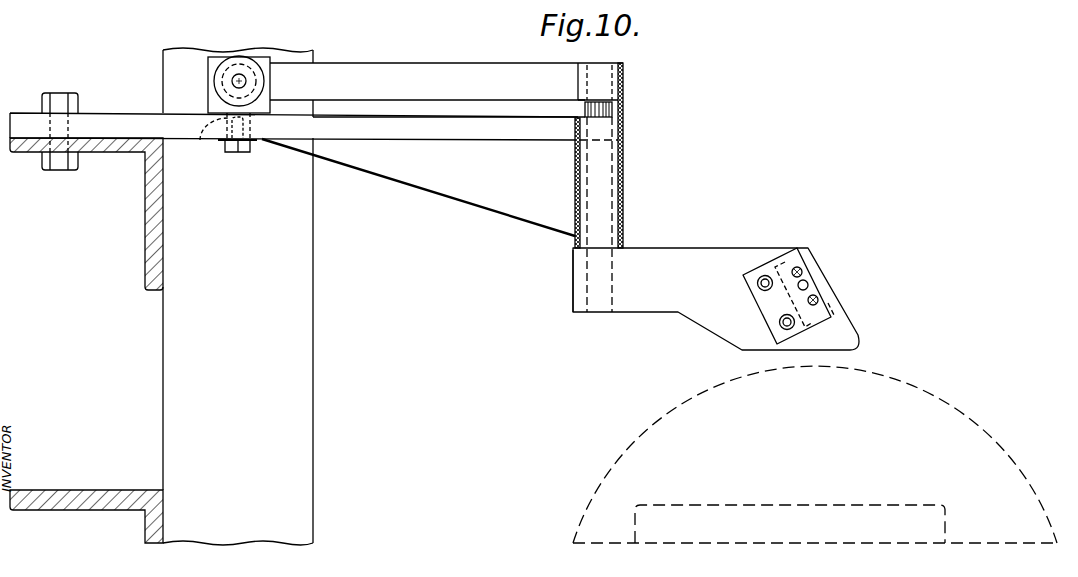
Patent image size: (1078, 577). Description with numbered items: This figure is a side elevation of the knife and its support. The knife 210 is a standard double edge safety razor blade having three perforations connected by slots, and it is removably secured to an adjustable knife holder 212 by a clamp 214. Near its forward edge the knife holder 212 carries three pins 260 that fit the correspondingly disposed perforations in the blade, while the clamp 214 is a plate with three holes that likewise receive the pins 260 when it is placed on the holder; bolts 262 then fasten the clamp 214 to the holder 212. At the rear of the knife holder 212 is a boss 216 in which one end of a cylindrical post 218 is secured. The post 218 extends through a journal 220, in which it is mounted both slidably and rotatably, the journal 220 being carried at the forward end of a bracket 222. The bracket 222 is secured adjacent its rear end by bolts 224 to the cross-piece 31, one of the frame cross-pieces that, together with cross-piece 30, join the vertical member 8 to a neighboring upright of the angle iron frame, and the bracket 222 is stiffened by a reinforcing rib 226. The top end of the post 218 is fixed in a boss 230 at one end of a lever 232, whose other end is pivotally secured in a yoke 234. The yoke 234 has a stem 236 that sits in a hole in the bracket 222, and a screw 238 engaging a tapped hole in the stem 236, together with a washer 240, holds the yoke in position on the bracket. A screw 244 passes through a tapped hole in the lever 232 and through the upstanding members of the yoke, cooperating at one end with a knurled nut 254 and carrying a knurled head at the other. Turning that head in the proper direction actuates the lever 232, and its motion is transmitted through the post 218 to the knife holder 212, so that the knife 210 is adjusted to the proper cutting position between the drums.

The vertical member 8 is at (175, 317).
The cross-piece 30 is at (85, 502).
The cross-piece 31 is at (119, 0).
The knife 210 is at (810, 262).
The knife holder 212 is at (728, 256).
The clamp 214 is at (835, 306).
The boss 216 is at (575, 285).
The cylindrical post 218 is at (614, 112).
The journal 220 is at (613, 187).
The bracket 222 is at (498, 133).
The bolts 224 is at (58, 98).
The reinforcing rib 226 is at (459, 197).
The boss 230 is at (612, 77).
The lever 232 is at (437, 73).
The yoke 234 is at (265, 58).
The stem 236 is at (205, 140).
The screw 238 is at (238, 153).
The washer 240 is at (257, 141).
The screw 244 is at (253, 81).
The knurled nut 254 is at (216, 81).
The pins 260 is at (802, 271).
The bolts 262 is at (780, 320).